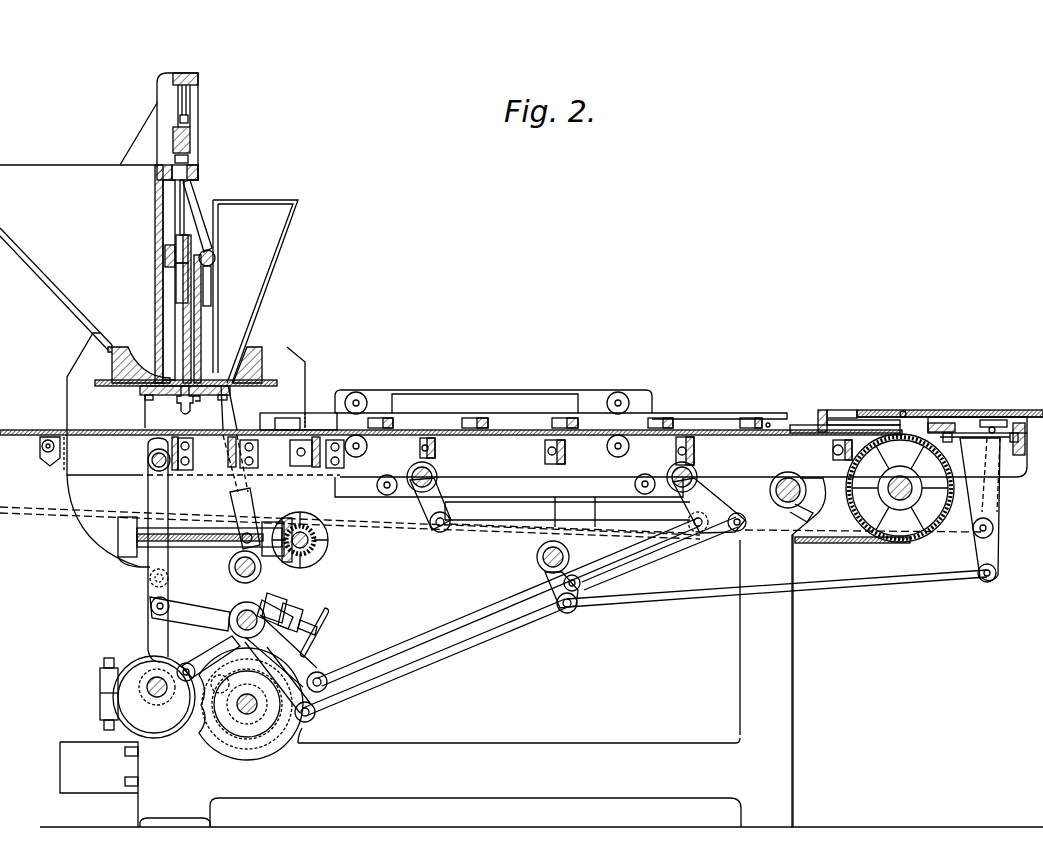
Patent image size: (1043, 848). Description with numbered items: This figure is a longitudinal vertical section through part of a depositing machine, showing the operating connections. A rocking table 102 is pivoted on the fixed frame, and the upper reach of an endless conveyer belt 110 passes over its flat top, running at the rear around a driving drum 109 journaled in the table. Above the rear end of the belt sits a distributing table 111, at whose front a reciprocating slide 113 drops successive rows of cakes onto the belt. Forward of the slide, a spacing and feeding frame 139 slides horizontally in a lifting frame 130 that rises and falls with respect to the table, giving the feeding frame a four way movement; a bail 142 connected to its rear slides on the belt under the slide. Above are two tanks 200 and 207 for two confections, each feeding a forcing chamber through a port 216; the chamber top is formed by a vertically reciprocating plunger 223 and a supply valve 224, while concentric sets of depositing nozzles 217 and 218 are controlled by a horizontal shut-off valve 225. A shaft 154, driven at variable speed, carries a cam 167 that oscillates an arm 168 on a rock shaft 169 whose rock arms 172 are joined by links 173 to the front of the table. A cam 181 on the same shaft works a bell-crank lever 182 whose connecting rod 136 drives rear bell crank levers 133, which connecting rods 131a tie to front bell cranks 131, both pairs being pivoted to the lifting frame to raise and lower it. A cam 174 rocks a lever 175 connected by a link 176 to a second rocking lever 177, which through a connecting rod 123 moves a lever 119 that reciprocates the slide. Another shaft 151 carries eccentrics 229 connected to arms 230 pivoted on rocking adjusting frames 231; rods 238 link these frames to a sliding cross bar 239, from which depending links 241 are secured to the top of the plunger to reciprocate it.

The rocking table 102 is at (547, 452).
The driving drum 109 is at (852, 506).
The endless conveyer belt 110 is at (800, 425).
The distributing table 111 is at (921, 417).
The reciprocating slide 113 is at (875, 410).
The lever 119 is at (990, 553).
The connecting rod 123 is at (636, 602).
The lifting frame 130 is at (433, 399).
The front bell cranks 131 is at (402, 518).
The connecting rods 131a is at (468, 530).
The rear bell crank levers 133 is at (705, 498).
The connecting rod 136 is at (478, 618).
The spacing and feeding frame 139 is at (703, 412).
The bail 142 is at (788, 424).
The shaft 151 is at (148, 680).
The shaft 154 is at (257, 717).
The cam 167 is at (196, 738).
The arm 168 is at (203, 651).
The rock shaft 169 is at (237, 614).
The rock arms 172 is at (206, 607).
The links 173 is at (165, 501).
The cam 174 is at (292, 722).
The rocking lever 175 is at (330, 700).
The link 176 is at (394, 672).
The second rocking lever 177 is at (602, 590).
The cam 181 is at (238, 740).
The bell-crank lever 182 is at (225, 630).
The tank 200 is at (46, 173).
The tank 207 is at (270, 206).
The port 216 is at (245, 360).
The depositing nozzles 217 is at (181, 412).
The depositing nozzles 218 is at (211, 409).
The plunger 223 is at (213, 265).
The supply valve 224 is at (212, 290).
The shut-off valve 225 is at (276, 384).
The eccentrics 229 is at (100, 713).
The arms 230 is at (148, 625).
The rocking adjusting frames 231 is at (130, 553).
The rods 238 is at (244, 485).
The sliding cross bar 239 is at (192, 141).
The depending links 241 is at (190, 193).